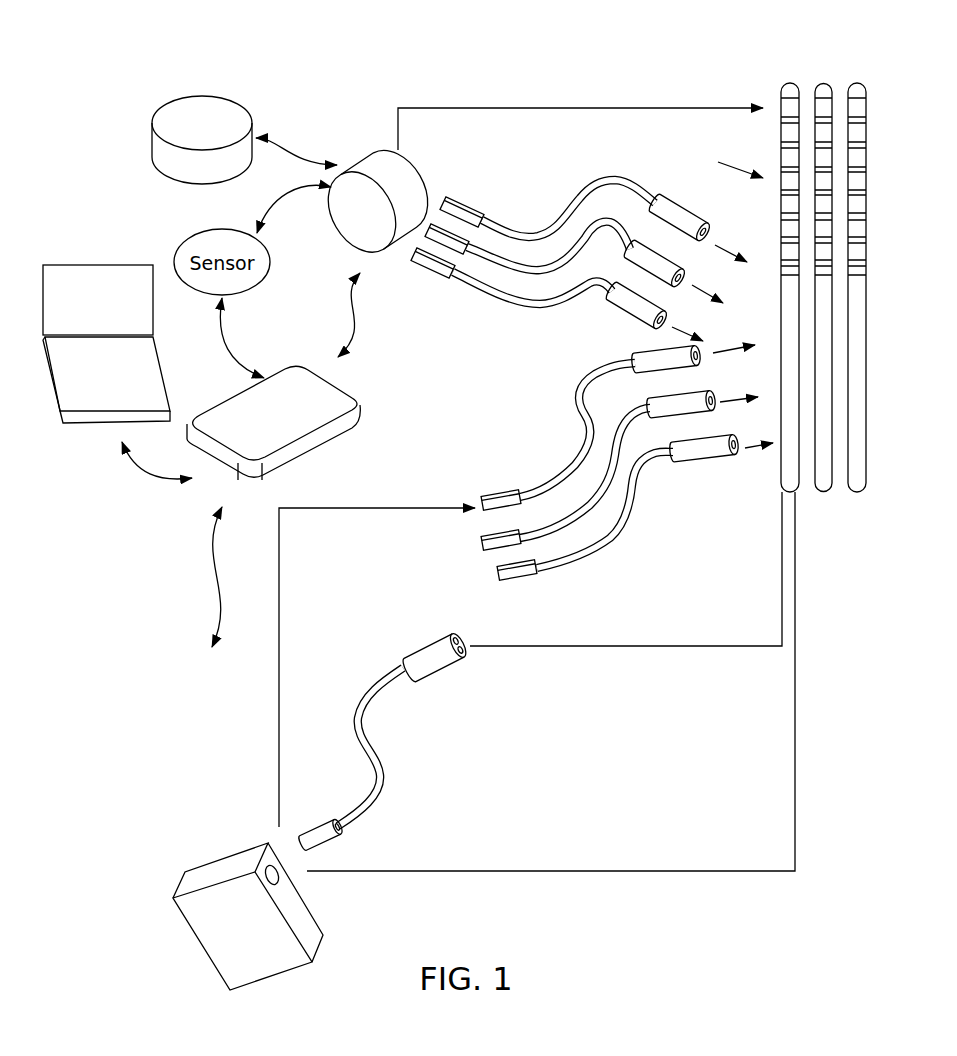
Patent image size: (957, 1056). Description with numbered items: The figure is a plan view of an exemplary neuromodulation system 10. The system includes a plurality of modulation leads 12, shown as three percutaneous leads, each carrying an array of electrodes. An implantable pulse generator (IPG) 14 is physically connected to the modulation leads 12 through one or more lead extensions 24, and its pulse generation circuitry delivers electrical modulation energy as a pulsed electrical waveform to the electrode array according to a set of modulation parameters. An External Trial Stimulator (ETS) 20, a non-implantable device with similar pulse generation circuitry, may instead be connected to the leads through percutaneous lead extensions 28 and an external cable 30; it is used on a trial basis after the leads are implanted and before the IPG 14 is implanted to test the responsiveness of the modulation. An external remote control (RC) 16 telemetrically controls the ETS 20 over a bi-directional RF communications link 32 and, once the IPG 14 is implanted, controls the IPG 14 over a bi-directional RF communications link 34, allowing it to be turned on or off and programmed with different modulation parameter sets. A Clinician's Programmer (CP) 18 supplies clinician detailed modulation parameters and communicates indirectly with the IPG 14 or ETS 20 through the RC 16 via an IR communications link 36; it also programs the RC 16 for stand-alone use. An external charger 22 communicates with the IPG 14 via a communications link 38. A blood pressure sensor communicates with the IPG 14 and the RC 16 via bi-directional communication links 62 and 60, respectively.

The neuromodulation system 10 is at (548, 60).
The modulation leads 12 is at (856, 84).
The implantable pulse generator (IPG) 14 is at (351, 170).
The external remote control (RC) 16 is at (276, 382).
The Clinician's Programmer (CP) 18 is at (85, 278).
The External Trial Stimulator (ETS) 20 is at (221, 870).
The external charger 22 is at (202, 104).
The lead extensions 24 is at (597, 278).
The percutaneous lead extensions 28 is at (571, 514).
The external cable 30 is at (384, 684).
The bi-directional RF communications link 32 is at (216, 618).
The bi-directional RF communications link 34 is at (356, 323).
The IR communications link 36 is at (143, 470).
The communications link 38 is at (291, 134).
The bi-directional communication link 60 is at (221, 343).
The bi-directional communication link 62 is at (287, 197).